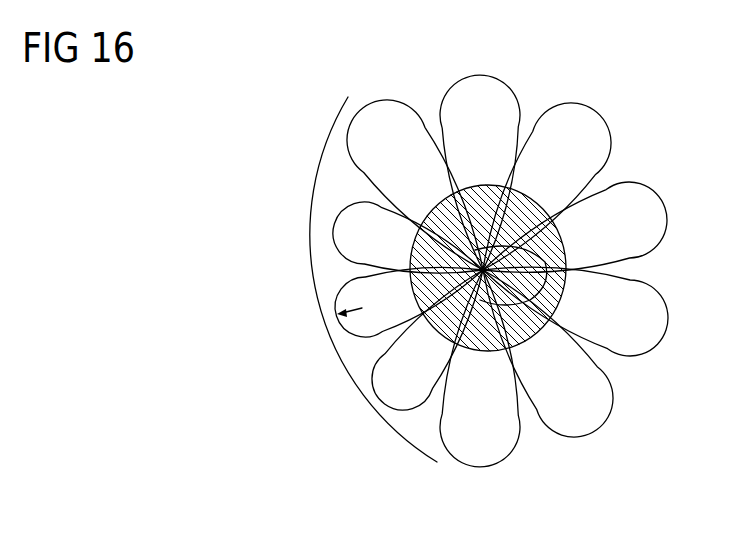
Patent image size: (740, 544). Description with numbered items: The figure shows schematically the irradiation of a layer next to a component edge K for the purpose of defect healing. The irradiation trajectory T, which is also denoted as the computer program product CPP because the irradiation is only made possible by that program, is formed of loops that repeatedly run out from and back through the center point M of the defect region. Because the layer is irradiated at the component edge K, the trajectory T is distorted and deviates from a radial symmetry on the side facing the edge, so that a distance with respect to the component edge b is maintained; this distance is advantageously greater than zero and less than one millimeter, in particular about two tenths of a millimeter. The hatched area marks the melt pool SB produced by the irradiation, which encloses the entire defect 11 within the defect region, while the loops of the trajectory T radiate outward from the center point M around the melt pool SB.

The computer program product CPP is at (377, 271).
The irradiation trajectory T is at (207, 161).
The component edge K is at (313, 233).
The distance with respect to the component edge b is at (312, 325).
The center point M is at (469, 340).
The melt pool SB is at (528, 340).
The defect 11 is at (562, 297).